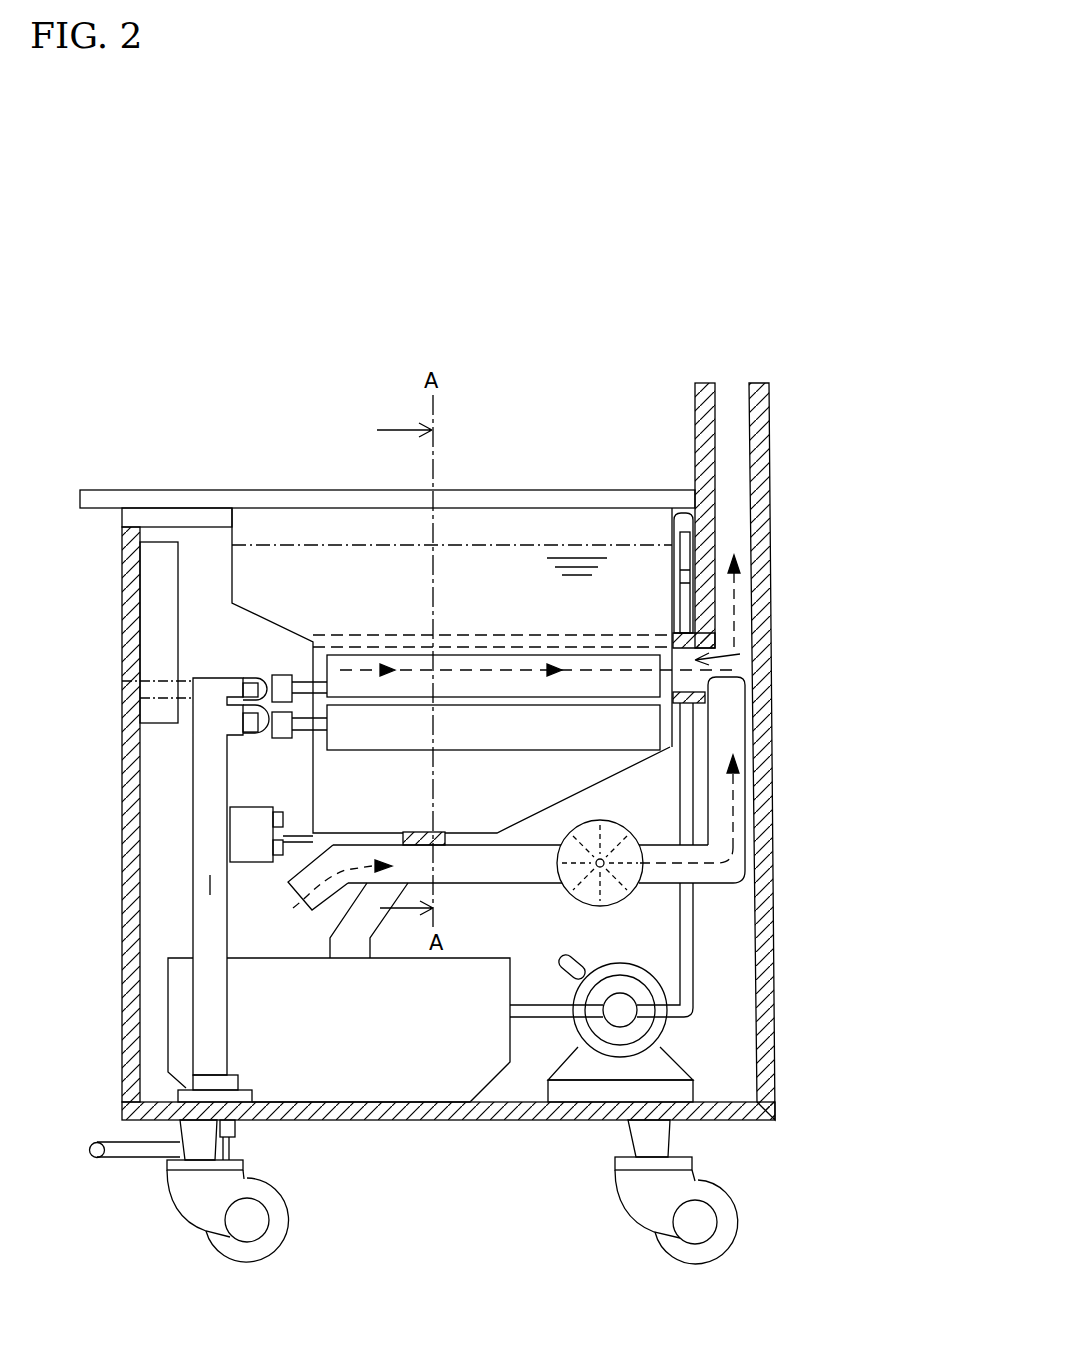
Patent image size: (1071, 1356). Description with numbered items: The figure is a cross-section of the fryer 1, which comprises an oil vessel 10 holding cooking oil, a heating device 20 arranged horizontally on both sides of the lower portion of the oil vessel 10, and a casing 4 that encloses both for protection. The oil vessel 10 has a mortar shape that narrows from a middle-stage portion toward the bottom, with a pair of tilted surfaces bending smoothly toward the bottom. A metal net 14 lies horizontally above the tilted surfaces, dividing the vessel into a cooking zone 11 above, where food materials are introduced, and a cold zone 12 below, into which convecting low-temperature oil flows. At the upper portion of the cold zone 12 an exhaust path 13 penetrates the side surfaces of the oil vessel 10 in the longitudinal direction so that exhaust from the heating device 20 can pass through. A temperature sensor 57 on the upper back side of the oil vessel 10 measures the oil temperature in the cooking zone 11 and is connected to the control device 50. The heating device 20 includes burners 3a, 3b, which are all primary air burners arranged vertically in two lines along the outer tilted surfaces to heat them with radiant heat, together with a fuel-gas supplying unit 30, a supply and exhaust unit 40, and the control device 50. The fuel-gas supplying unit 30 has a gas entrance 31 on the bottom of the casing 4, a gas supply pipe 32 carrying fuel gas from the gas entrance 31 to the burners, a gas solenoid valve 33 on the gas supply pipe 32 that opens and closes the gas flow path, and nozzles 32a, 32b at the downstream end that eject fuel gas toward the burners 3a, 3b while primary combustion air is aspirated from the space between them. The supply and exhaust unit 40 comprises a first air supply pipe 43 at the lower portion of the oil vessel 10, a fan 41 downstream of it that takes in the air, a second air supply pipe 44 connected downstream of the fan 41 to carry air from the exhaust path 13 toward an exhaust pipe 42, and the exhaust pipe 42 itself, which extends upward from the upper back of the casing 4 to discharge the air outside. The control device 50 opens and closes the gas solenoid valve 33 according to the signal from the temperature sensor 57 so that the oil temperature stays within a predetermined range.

The fryer 1 is at (430, 222).
The casing 4 is at (778, 1072).
The oil vessel 10 is at (230, 568).
The cooking zone 11 is at (467, 587).
The cold zone 12 is at (462, 788).
The exhaust path 13 is at (740, 654).
The metal net 14 is at (390, 635).
The heating device 20 is at (547, 762).
The burner 3a is at (358, 688).
The burner 3b is at (406, 735).
The fuel-gas supplying unit 30 is at (237, 1018).
The gas entrance 31 is at (90, 1140).
The gas supply pipe 32 is at (232, 978).
The nozzle 32a is at (265, 680).
The nozzle 32b is at (262, 712).
The gas solenoid valve 33 is at (246, 838).
The supply and exhaust unit 40 is at (752, 753).
The fan 41 is at (617, 907).
The exhaust pipe 42 is at (744, 402).
The first air supply pipe 43 is at (505, 868).
The second air supply pipe 44 is at (738, 813).
The control device 50 is at (155, 607).
The temperature sensor 57 is at (672, 583).